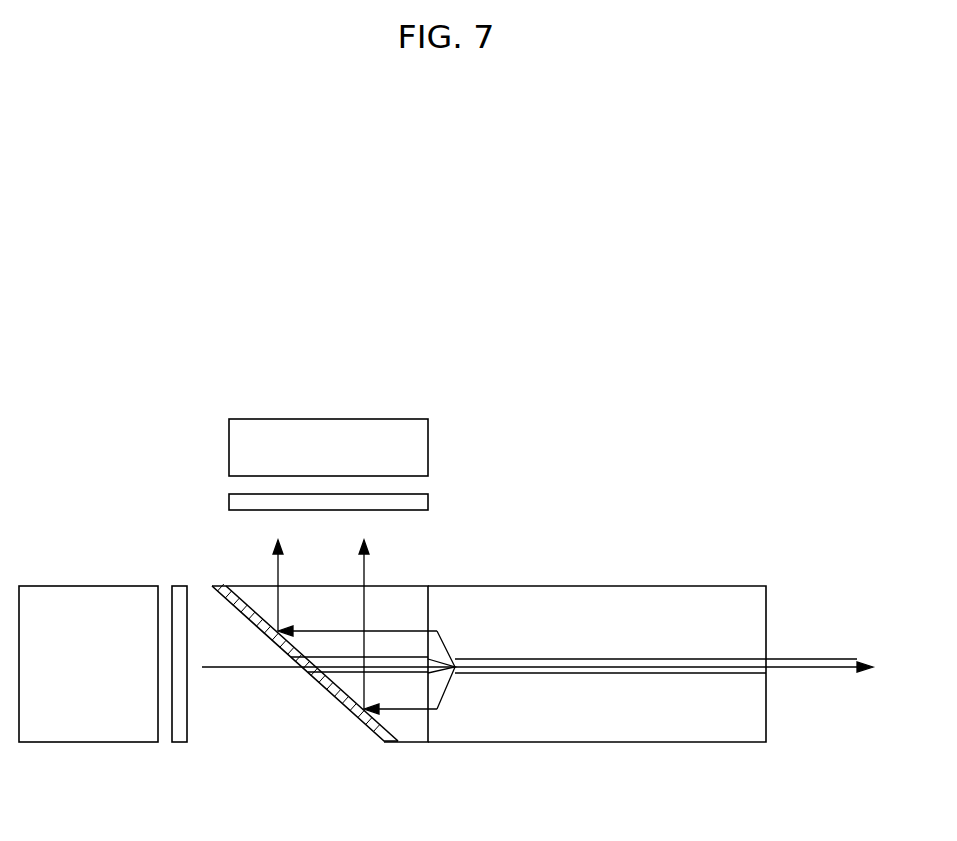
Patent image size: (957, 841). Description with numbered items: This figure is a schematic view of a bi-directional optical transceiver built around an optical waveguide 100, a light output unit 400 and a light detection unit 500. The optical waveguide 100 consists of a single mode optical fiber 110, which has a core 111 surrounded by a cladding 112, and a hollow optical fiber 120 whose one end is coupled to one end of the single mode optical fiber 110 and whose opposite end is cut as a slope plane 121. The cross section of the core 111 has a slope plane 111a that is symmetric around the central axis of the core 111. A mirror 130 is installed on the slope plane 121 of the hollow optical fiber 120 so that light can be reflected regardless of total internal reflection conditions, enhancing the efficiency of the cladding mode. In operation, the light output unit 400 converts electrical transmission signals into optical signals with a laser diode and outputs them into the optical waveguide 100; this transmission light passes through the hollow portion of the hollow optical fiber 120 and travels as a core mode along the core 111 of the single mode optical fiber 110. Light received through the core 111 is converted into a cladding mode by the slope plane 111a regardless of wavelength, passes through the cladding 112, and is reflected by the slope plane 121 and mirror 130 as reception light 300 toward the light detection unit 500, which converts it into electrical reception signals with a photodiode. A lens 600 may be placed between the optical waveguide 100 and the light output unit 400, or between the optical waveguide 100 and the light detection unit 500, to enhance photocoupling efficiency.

The optical waveguide 100 is at (543, 495).
The single mode optical fiber 110 is at (537, 624).
The core 111 is at (711, 660).
The slope plane 111a is at (440, 690).
The cladding 112 is at (671, 597).
The hollow optical fiber 120 is at (401, 592).
The slope plane 121 is at (390, 728).
The mirror 130 is at (370, 726).
The reception light 300 is at (276, 562).
The light output unit 400 is at (93, 743).
The light detection unit 500 is at (229, 450).
The lens 600 is at (229, 500).